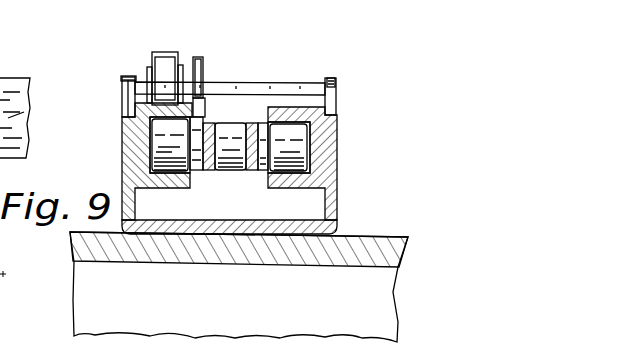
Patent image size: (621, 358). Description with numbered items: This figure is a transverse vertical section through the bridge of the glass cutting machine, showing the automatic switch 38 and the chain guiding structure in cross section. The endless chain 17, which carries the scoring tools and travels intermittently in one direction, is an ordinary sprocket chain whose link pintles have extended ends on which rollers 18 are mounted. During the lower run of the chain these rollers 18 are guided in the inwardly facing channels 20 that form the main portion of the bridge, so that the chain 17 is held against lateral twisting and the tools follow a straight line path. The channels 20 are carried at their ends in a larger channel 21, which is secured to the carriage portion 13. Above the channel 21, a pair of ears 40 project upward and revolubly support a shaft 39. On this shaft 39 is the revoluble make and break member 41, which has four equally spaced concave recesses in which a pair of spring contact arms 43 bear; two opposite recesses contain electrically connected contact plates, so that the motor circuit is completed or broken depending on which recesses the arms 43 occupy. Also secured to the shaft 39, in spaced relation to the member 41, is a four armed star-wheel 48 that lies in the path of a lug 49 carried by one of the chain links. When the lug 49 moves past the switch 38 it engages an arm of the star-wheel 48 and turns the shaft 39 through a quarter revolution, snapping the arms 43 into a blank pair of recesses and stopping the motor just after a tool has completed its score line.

The carriage portion 13 is at (252, 255).
The endless chain 17 is at (27, 104).
The rollers 18 is at (285, 127).
The inwardly facing channels 20 is at (147, 112).
The larger channel 21 is at (330, 188).
The automatic switch 38 is at (126, 56).
The shaft 39 is at (232, 90).
The ears 40 is at (130, 93).
The make and break member 41 is at (182, 73).
The spring contact arms 43 is at (165, 63).
The star-wheel 48 is at (200, 75).
The lug 49 is at (205, 110).